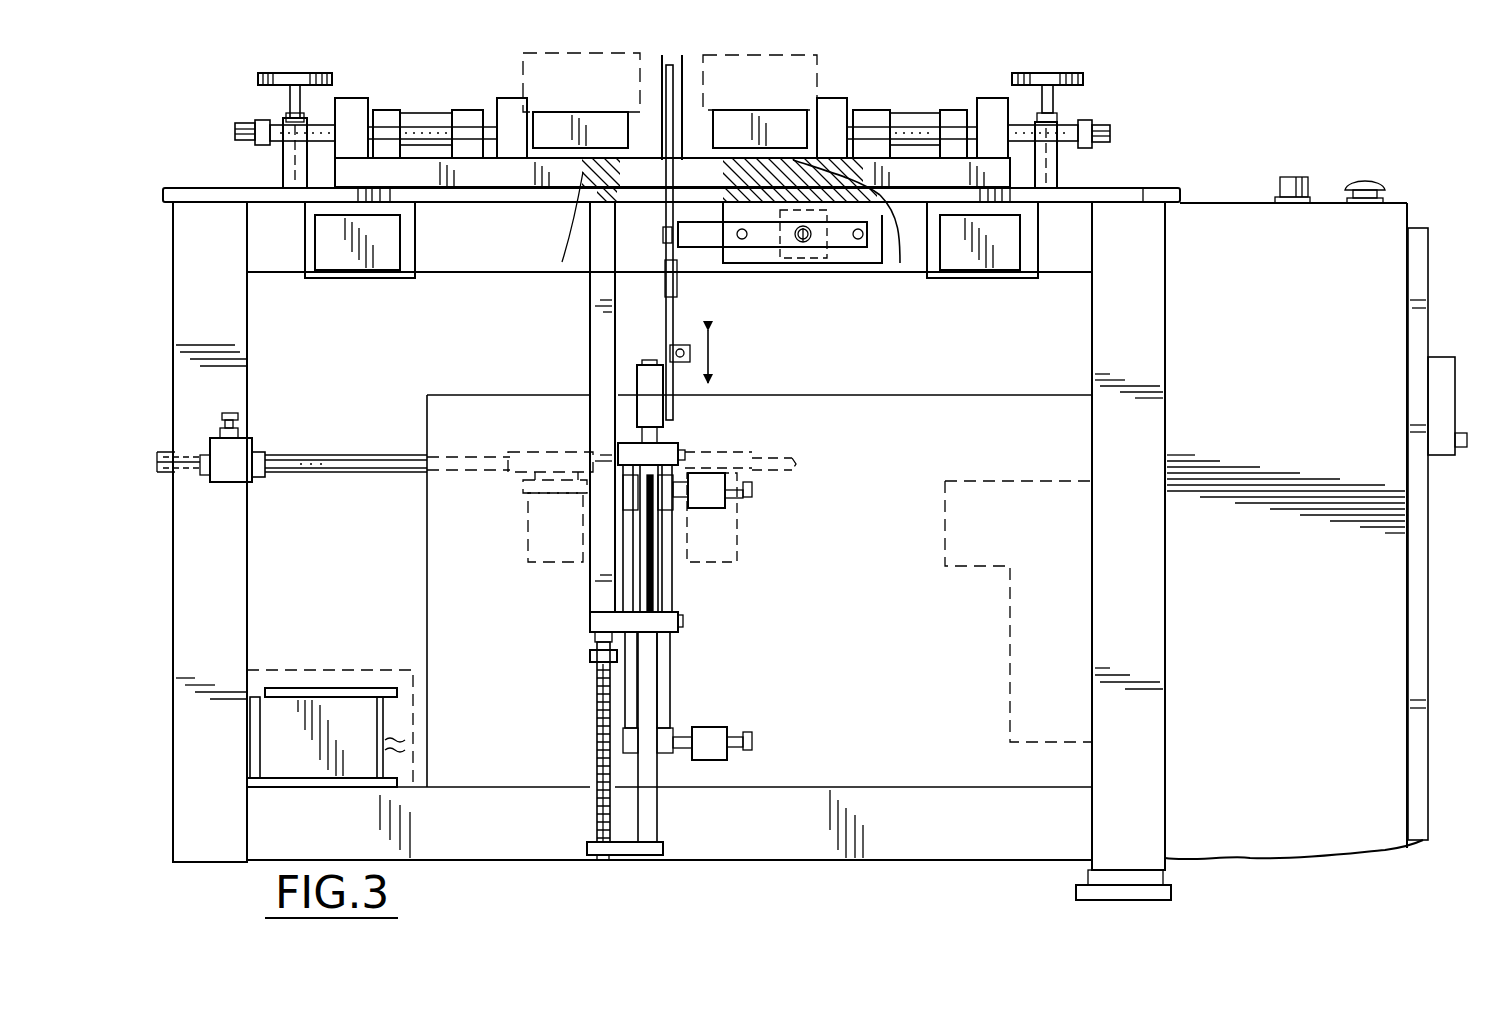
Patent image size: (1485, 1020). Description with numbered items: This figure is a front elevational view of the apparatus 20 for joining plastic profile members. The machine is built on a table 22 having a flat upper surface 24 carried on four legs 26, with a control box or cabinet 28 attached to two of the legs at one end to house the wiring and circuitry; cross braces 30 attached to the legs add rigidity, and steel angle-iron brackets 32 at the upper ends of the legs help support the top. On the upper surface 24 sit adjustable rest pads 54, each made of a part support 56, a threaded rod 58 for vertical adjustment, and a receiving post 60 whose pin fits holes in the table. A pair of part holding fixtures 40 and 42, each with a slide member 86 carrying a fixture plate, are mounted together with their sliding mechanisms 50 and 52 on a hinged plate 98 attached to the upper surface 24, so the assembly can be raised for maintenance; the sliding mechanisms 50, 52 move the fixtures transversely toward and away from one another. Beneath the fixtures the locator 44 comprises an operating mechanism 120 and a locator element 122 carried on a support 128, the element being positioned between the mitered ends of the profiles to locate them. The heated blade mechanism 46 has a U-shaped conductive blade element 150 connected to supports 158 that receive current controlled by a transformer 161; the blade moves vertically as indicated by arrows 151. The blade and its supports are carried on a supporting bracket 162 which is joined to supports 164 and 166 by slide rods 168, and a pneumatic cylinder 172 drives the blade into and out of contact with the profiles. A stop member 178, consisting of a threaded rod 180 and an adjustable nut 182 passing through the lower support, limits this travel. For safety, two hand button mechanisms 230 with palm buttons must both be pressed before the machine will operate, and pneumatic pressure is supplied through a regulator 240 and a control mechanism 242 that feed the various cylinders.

The apparatus 20 is at (1198, 145).
The table 22 is at (174, 332).
The upper surface 24 is at (175, 187).
The legs 26 is at (248, 596).
The control box or cabinet 28 is at (1244, 845).
The supports or cross braces 30 is at (890, 788).
The supports or brackets 32 is at (281, 273).
The part holding fixture 40 is at (669, 113).
The part holding fixture 42 is at (963, 98).
The locator 44 is at (766, 246).
The heated blade mechanism 46 is at (682, 522).
The sliding mechanism 50 is at (424, 109).
The sliding mechanism 52 is at (925, 96).
The adjustable rest pads 54 is at (276, 73).
The part support 56 is at (333, 74).
The threaded rod 58 is at (290, 95).
The receiving post 60 is at (283, 168).
The slide member 86 is at (587, 113).
The hinged plate 98 is at (481, 174).
The operating mechanism 120 is at (862, 252).
The locator element 122 is at (602, 215).
The support 128 is at (702, 242).
The blade element 150 is at (656, 263).
The arrows 151 is at (712, 358).
The support 158 is at (668, 343).
The transformer 161 is at (320, 688).
The supporting bracket 162 is at (666, 452).
The support 164 is at (671, 626).
The support 166 is at (663, 846).
The slide rod 168 is at (658, 597).
The pneumatic cylinder 172 is at (590, 424).
The stop member 178 is at (562, 737).
The threaded rod 180 is at (592, 790).
The adjustable nut or stopping member 182 is at (590, 656).
The hand button mechanisms 230 is at (367, 279).
The regulator 240 is at (252, 440).
The control mechanism 242 is at (526, 521).